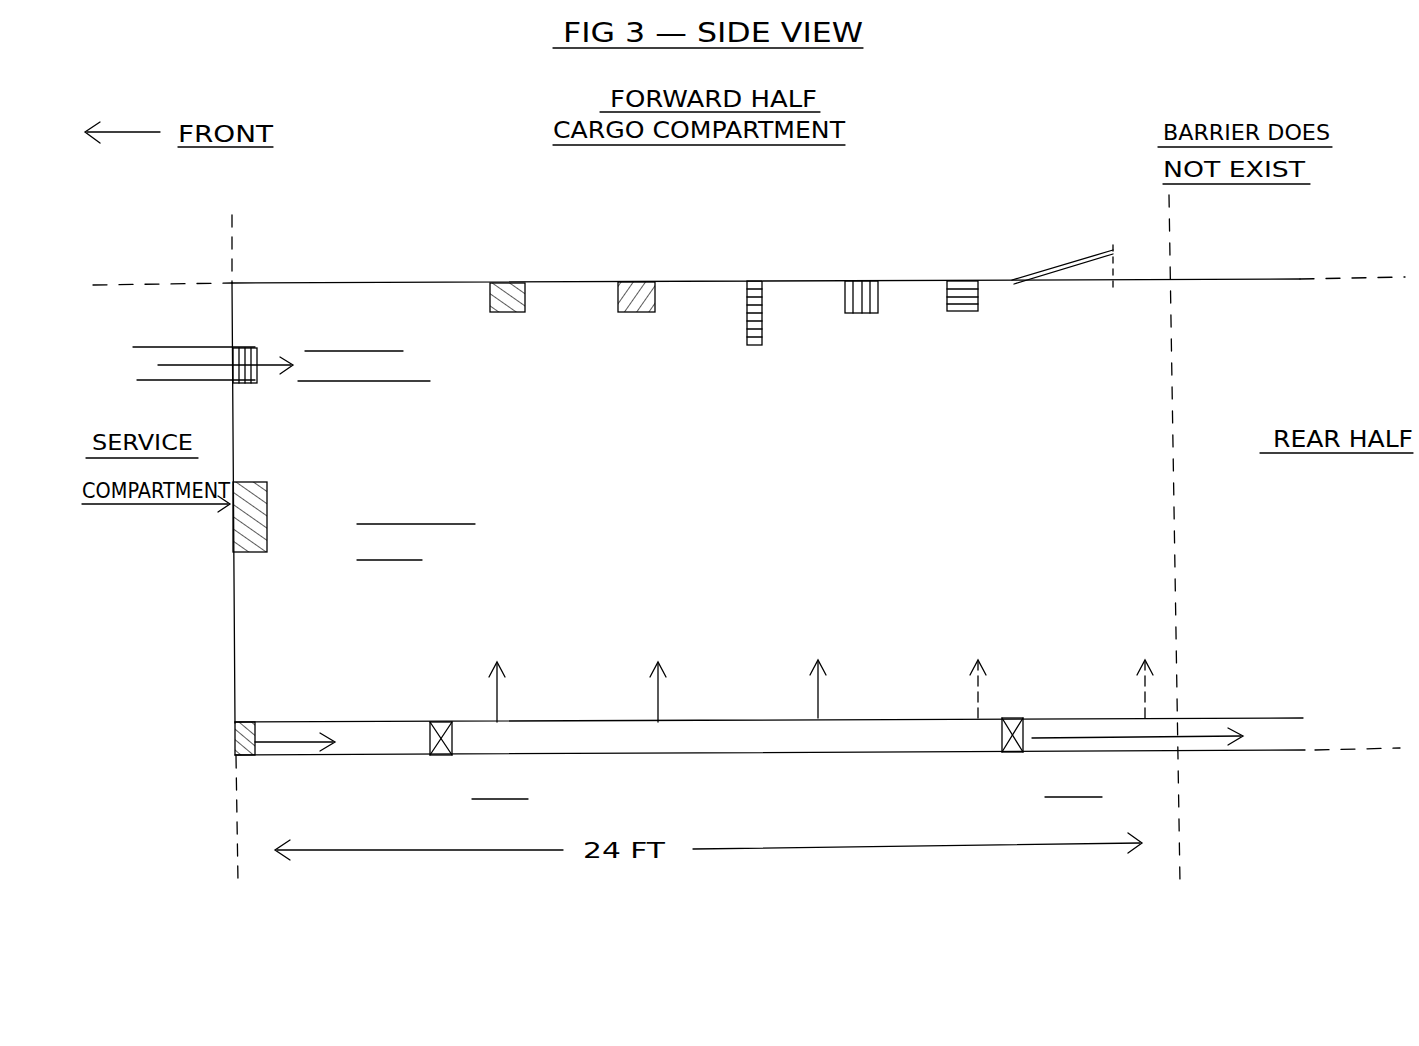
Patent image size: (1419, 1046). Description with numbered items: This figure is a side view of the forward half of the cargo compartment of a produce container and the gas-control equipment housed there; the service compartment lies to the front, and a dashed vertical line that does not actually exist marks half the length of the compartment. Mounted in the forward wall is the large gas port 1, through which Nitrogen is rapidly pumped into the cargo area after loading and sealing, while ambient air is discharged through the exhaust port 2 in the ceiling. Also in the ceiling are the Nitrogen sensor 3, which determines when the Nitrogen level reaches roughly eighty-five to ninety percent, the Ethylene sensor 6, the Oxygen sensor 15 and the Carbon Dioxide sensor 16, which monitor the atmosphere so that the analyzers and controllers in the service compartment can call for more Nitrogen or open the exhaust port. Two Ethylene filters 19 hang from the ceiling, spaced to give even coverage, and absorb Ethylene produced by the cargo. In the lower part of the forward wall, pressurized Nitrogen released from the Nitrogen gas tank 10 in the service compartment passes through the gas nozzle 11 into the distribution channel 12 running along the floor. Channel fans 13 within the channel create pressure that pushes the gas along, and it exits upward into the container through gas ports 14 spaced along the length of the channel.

The large gas port 1 is at (281, 352).
The exhaust port 2 is at (1062, 258).
The Nitrogen sensor 3 is at (636, 276).
The Ethylene sensor 6 is at (861, 275).
The Nitrogen gas tank 10 is at (354, 521).
The gas nozzle 11 is at (325, 723).
The distribution channel 12 is at (817, 736).
The channel fan 13 is at (762, 758).
The gas port 14 is at (819, 674).
The Oxygen sensor 15 is at (510, 275).
The Carbon Dioxide sensor 16 is at (964, 276).
The Ethylene filter 19 is at (755, 294).